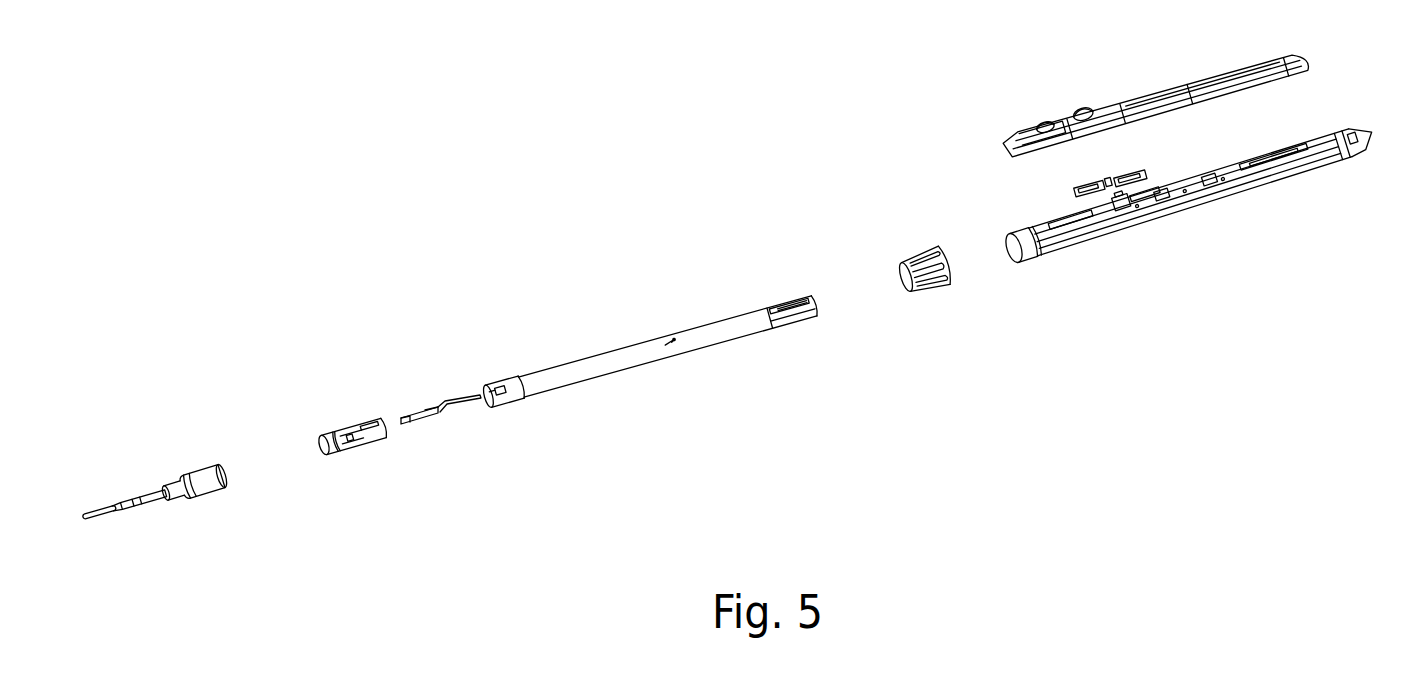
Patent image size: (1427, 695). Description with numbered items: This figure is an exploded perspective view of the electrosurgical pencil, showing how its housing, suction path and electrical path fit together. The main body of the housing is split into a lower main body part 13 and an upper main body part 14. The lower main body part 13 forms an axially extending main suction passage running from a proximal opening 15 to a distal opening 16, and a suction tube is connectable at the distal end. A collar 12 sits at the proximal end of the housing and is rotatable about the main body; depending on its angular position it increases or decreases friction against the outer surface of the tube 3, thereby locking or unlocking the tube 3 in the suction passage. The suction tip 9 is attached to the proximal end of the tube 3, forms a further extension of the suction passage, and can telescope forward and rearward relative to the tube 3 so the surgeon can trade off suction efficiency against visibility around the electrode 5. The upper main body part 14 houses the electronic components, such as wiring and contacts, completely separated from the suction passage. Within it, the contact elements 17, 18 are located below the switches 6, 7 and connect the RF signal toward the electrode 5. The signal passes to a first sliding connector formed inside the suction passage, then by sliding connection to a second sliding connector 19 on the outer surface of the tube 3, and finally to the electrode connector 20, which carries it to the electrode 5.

The tube 3 is at (733, 332).
The electrode 5 is at (120, 503).
The switch 6 is at (1083, 110).
The switch 7 is at (1045, 123).
The suction tip 9 is at (220, 487).
The collar 12 is at (930, 288).
The lower main body part 13 is at (1126, 207).
The upper main body part 14 is at (1020, 130).
The proximal opening 15 is at (1005, 240).
The distal opening 16 is at (1353, 133).
The contact element 17 is at (1140, 177).
The contact element 18 is at (1073, 193).
The second sliding connector 19 is at (433, 407).
The electrode connector 20 is at (346, 450).